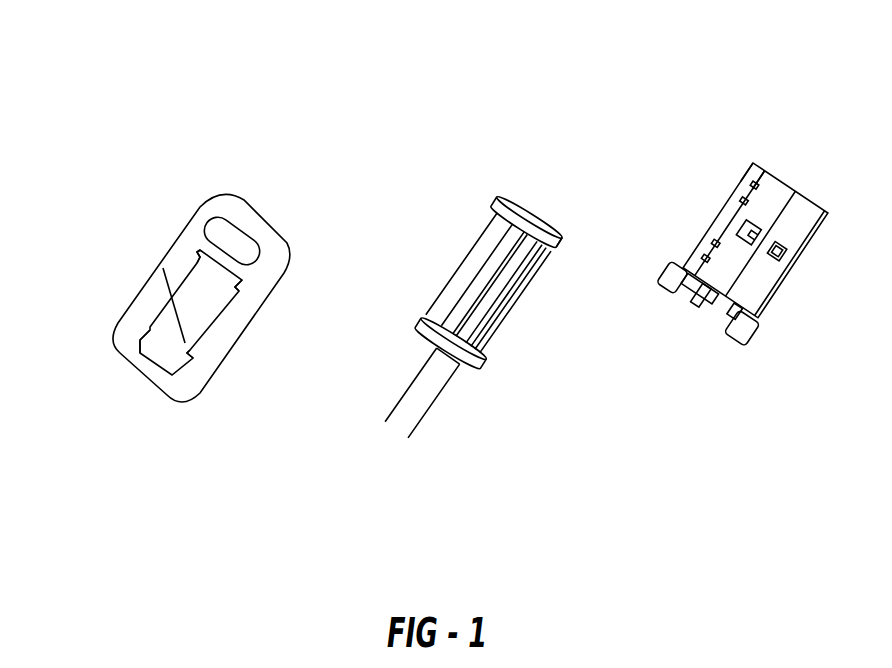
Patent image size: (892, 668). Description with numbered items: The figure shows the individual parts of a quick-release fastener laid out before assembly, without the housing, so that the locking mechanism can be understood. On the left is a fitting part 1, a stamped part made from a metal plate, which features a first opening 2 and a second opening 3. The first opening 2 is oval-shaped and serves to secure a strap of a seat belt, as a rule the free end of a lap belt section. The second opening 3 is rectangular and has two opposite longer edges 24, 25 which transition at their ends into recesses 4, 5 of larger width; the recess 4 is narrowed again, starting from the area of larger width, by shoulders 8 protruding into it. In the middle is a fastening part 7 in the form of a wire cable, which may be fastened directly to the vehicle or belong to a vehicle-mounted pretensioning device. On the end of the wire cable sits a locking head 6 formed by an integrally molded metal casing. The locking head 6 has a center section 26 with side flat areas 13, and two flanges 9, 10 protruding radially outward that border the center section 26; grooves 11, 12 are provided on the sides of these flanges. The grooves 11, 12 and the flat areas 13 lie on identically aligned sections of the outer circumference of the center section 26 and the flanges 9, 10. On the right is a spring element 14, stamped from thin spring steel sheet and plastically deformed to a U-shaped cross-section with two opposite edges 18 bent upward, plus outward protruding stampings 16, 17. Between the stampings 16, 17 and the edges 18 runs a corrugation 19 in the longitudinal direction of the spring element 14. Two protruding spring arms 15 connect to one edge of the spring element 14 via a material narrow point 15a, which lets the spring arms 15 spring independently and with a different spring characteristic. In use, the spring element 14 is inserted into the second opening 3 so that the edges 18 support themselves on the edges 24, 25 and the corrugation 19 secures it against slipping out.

The fitting part 1 is at (178, 262).
The first opening 2 is at (248, 249).
The second opening 3 is at (195, 318).
The recess 4 is at (157, 337).
The recess 5 is at (163, 262).
The shoulders 8 is at (137, 345).
The longer edge 24 is at (207, 297).
The longer edge 25 is at (185, 344).
The locking head 6 is at (483, 262).
The fastening part 7 is at (427, 387).
The flange 9 is at (470, 362).
The flange 10 is at (512, 216).
The groove 11 is at (565, 247).
The groove 12 is at (490, 362).
The flat areas 13 is at (517, 300).
The center section 26 is at (462, 300).
The spring element 14 is at (777, 202).
The spring arms 15 is at (673, 287).
The material narrow point 15a is at (743, 293).
The stamping 16 is at (745, 193).
The stamping 17 is at (710, 250).
The edges 18 is at (748, 167).
The corrugation 19 is at (765, 167).